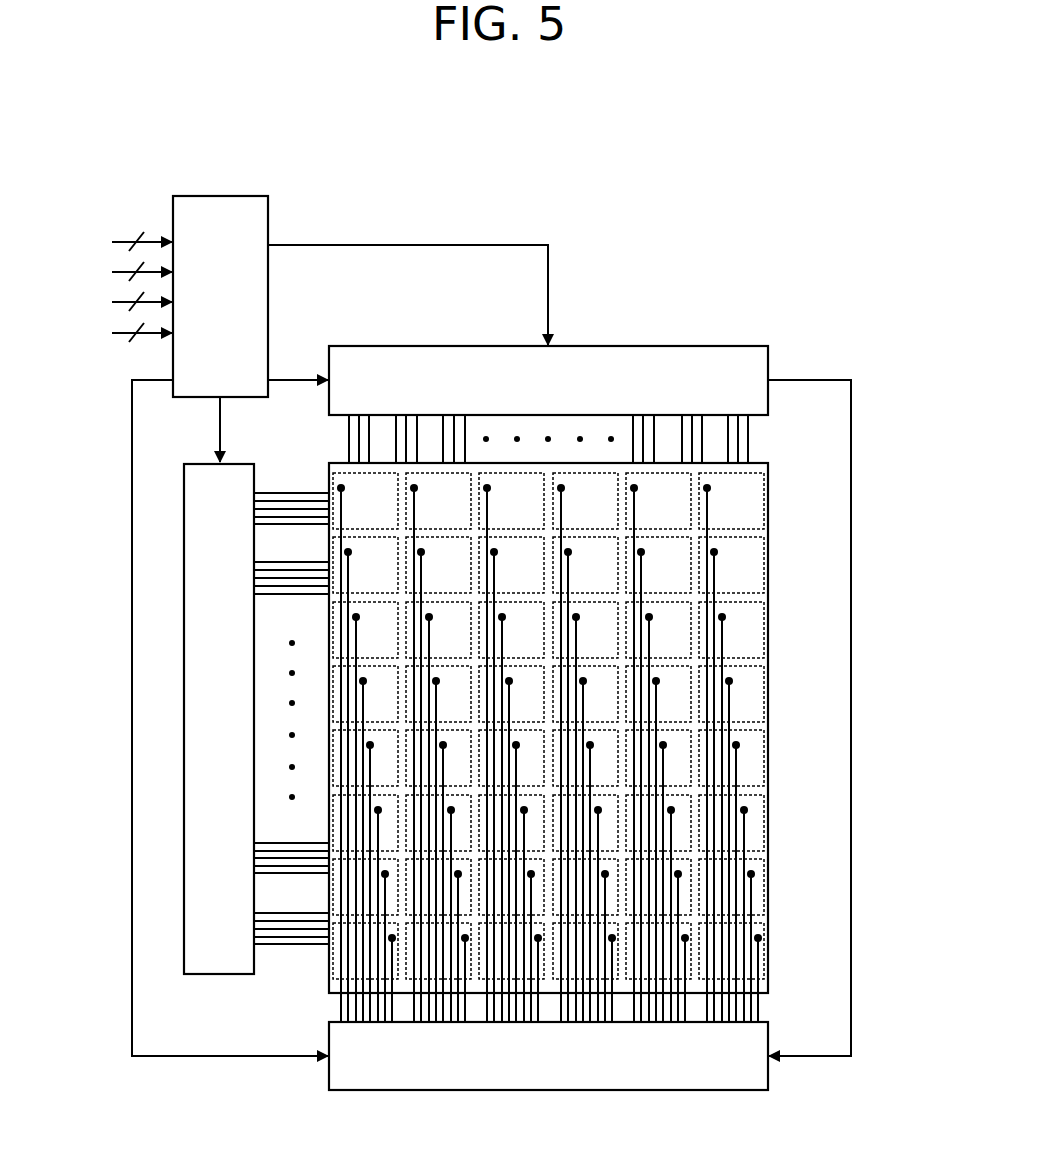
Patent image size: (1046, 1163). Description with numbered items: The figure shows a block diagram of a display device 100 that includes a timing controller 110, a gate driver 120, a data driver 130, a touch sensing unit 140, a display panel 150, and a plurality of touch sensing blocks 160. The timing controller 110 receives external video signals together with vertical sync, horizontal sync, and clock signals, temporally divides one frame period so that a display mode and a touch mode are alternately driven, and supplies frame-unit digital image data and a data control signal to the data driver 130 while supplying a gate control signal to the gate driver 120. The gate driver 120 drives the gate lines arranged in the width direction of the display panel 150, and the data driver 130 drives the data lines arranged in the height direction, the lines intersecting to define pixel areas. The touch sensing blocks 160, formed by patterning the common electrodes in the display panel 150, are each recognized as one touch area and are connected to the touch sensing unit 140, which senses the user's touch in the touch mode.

The display device 100 is at (752, 153).
The timing controller 110 is at (237, 307).
The gate driver 120 is at (237, 704).
The data driver 130 is at (566, 389).
The touch sensing unit 140 is at (566, 1066).
The display panel 150 is at (770, 463).
The touch sensing block 160 is at (766, 497).